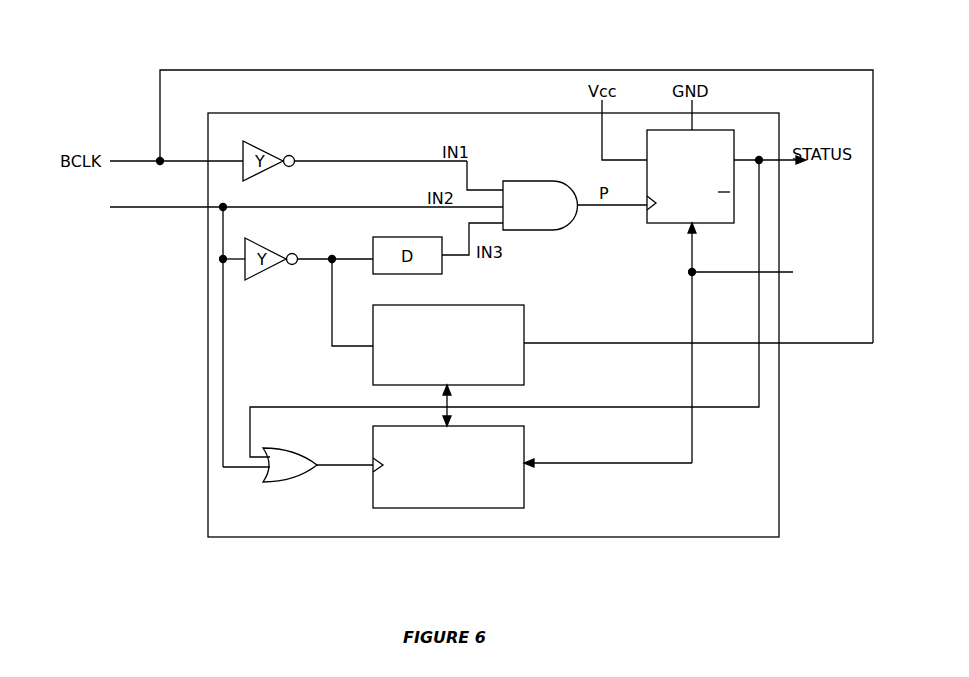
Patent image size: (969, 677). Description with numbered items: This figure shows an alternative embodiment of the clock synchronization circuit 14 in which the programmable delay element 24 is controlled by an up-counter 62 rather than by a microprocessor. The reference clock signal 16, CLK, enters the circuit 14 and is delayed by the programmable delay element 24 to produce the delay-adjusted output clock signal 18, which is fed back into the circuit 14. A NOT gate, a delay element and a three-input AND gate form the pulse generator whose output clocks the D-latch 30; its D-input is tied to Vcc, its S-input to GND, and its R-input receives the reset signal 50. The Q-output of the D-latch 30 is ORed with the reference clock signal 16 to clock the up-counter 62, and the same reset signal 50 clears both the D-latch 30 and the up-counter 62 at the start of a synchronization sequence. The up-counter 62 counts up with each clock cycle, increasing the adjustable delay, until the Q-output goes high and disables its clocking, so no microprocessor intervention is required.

The clock synchronization circuit 14 is at (432, 106).
The reference clock signal 16 is at (157, 214).
The output clock signal 18 is at (832, 350).
The programmable delay element 24 is at (510, 372).
The D-latch 30 is at (660, 223).
The reset signal 50 is at (712, 272).
The up-counter 62 is at (510, 500).